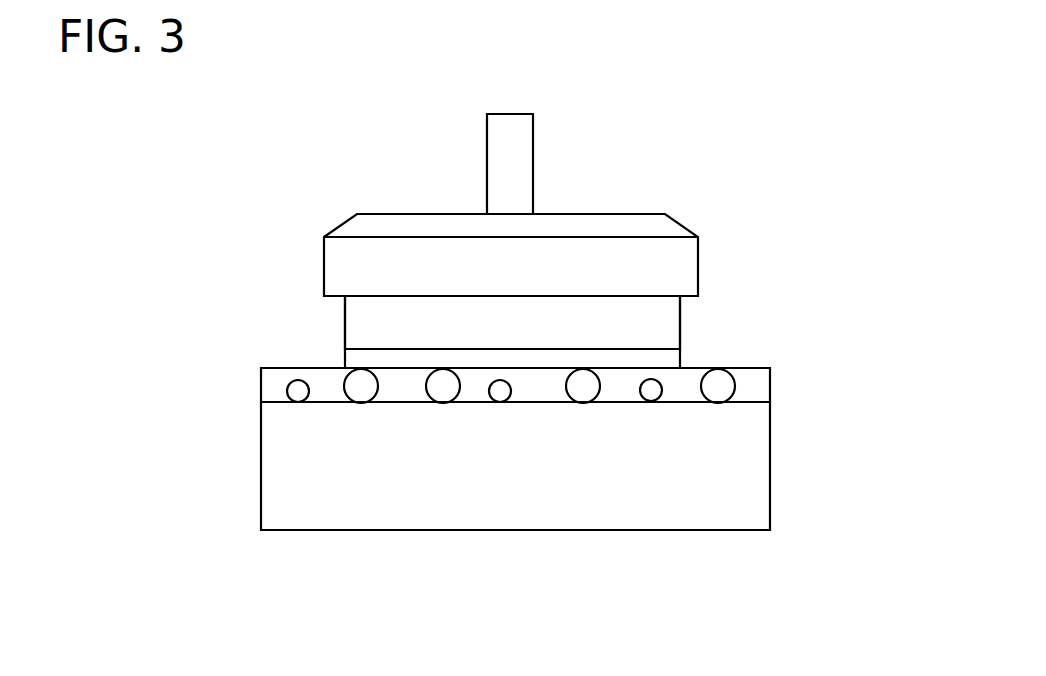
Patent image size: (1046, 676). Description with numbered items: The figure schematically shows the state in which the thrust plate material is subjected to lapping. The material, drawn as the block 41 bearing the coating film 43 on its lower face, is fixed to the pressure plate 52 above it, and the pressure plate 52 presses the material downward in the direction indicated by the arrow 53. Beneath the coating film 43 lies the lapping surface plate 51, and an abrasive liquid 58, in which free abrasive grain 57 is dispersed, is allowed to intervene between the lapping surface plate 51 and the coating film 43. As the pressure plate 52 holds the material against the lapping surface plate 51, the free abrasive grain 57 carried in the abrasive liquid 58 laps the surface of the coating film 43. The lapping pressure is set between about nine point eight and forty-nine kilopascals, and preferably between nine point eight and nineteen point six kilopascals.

The piezoelectric element 41 is at (352, 322).
The coating film 43 is at (352, 360).
The lapping surface plate 51 is at (575, 517).
The pressure plate 52 is at (688, 260).
The pressing direction 53 is at (682, 328).
The free abrasive grain 57 is at (362, 393).
The abrasive liquid 58 is at (760, 383).